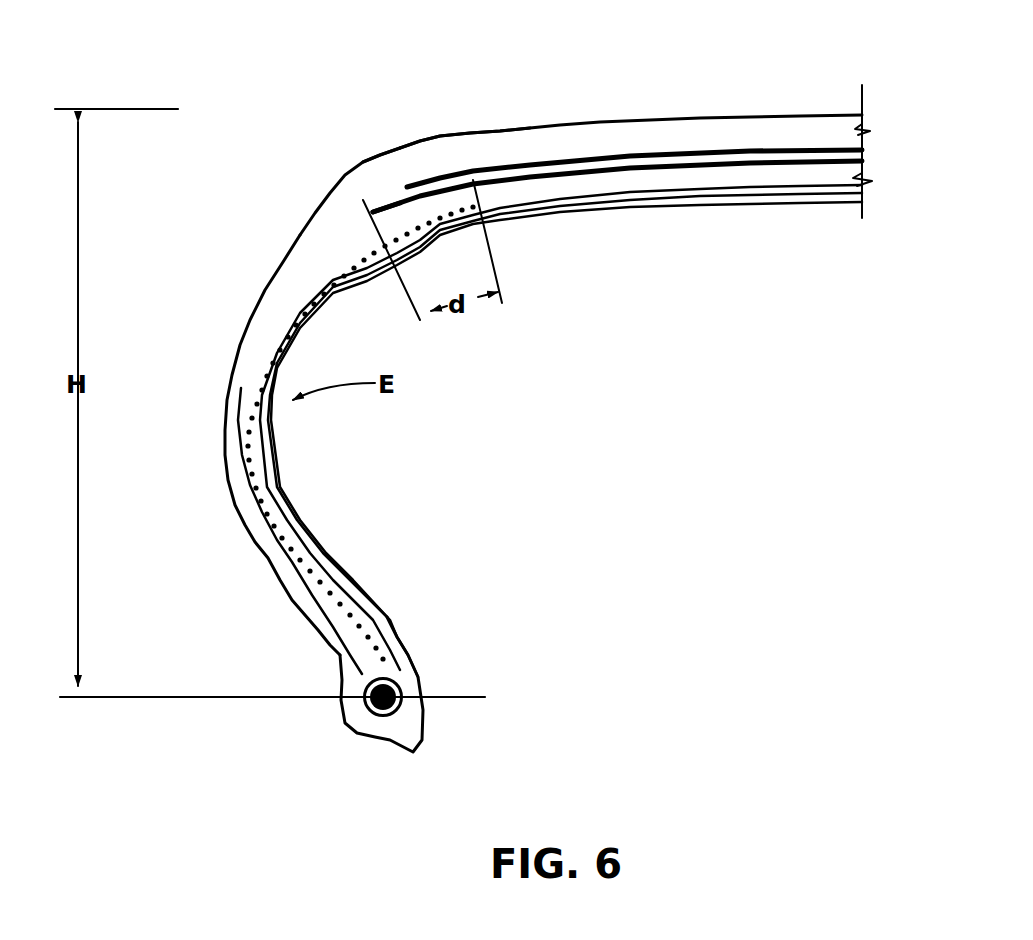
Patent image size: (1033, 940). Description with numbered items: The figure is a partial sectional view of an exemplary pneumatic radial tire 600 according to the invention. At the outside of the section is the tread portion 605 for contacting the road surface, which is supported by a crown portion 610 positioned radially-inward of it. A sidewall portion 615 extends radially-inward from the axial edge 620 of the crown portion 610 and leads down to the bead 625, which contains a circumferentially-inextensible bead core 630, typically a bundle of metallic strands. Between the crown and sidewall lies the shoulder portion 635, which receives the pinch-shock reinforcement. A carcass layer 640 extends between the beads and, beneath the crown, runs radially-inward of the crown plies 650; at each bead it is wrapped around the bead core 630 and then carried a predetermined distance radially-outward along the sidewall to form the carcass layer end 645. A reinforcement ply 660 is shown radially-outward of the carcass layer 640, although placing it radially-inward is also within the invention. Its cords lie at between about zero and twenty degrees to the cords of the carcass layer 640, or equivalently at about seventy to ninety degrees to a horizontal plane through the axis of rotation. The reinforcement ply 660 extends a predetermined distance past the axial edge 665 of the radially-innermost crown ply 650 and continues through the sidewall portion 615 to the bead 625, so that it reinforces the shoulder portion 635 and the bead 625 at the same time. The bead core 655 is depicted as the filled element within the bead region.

The tire 600 is at (676, 427).
The tread portion 605 is at (598, 114).
The crown portion 610 is at (522, 150).
The sidewall portion 615 is at (243, 494).
The axial edge 620 is at (440, 92).
The bead 625 is at (403, 722).
The bead core 630 is at (366, 687).
The shoulder portion 635 is at (361, 157).
The carcass layer 640 is at (290, 522).
The carcass layer end 645 is at (293, 556).
The crown ply 650 is at (750, 150).
The bead core 655 is at (386, 677).
The reinforcement ply 660 is at (298, 289).
The axial edge 665 is at (364, 206).